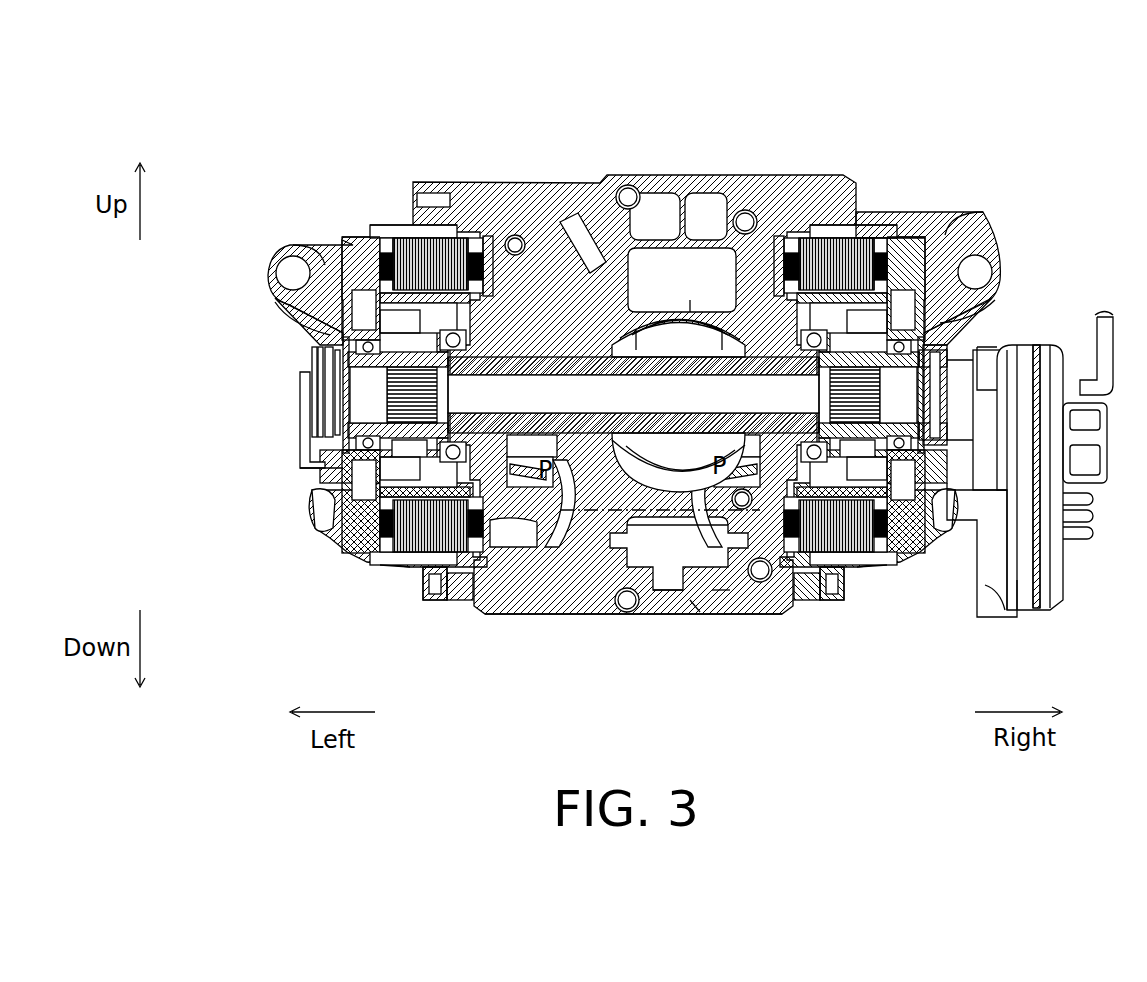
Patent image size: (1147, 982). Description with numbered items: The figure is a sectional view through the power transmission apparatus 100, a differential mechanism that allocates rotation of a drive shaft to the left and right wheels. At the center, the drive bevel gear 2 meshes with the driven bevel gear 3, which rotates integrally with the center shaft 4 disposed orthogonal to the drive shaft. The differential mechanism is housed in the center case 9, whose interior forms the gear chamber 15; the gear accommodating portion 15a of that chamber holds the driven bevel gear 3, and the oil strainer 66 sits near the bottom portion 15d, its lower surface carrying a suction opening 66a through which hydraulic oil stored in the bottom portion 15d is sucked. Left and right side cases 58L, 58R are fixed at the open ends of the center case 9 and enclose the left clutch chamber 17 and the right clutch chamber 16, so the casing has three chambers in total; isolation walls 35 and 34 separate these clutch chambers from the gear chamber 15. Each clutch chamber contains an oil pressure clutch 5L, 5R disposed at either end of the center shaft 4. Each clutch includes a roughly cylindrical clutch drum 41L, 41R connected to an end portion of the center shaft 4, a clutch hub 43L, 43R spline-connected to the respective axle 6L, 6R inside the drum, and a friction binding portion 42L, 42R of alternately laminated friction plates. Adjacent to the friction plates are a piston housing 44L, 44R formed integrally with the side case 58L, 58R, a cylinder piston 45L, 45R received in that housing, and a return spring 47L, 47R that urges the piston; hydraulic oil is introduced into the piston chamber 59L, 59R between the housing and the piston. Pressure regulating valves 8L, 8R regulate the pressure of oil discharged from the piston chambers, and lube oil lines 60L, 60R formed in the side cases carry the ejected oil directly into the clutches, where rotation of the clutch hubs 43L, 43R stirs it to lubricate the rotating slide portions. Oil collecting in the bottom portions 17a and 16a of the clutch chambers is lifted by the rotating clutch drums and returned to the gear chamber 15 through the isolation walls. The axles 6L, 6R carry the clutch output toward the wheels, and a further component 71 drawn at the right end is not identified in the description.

The power transmission apparatus 100 is at (993, 122).
The drive bevel gear 2 is at (652, 300).
The driven bevel gear 3 is at (555, 210).
The center shaft 4 is at (696, 300).
The center case 9 is at (560, 300).
The isolation wall 35 is at (508, 605).
The left oil pressure clutch 5L is at (440, 236).
The right oil pressure clutch 5R is at (820, 236).
The clutch drum 41L is at (472, 236).
The clutch drum 41R is at (778, 236).
The friction binding portion 42L is at (408, 236).
The friction binding portion 42R is at (858, 236).
The piston housing 44L is at (382, 228).
The piston housing 44R is at (890, 228).
The cylinder piston 45L is at (312, 242).
The cylinder piston 45R is at (948, 242).
The return spring 47L is at (300, 245).
The return spring 47R is at (980, 212).
The left pressure regulating valve 8L is at (285, 262).
The right pressure regulating valve 8R is at (995, 250).
The piston chamber 59L is at (352, 245).
The piston chamber 59R is at (918, 245).
The lube oil line 60L is at (275, 302).
The lube oil line 60R is at (995, 300).
The clutch hub 43L is at (345, 333).
The clutch hub 43R is at (960, 318).
The left axle 6L is at (302, 383).
The right axle 6R is at (970, 362).
The left side case 58L is at (370, 567).
The right side case 58R is at (897, 567).
The left clutch chamber 17 is at (422, 568).
The bottom portion 17a is at (390, 565).
The gear chamber 15 is at (560, 612).
The gear accommodating portion 15a is at (710, 612).
The bottom portion 15d is at (718, 612).
The isolation wall 34 is at (772, 612).
The oil strainer 66 is at (640, 595).
The suction opening 66a is at (668, 592).
The right clutch chamber 16 is at (840, 568).
The bottom portion 16a is at (880, 565).
The connector 71 is at (1018, 608).